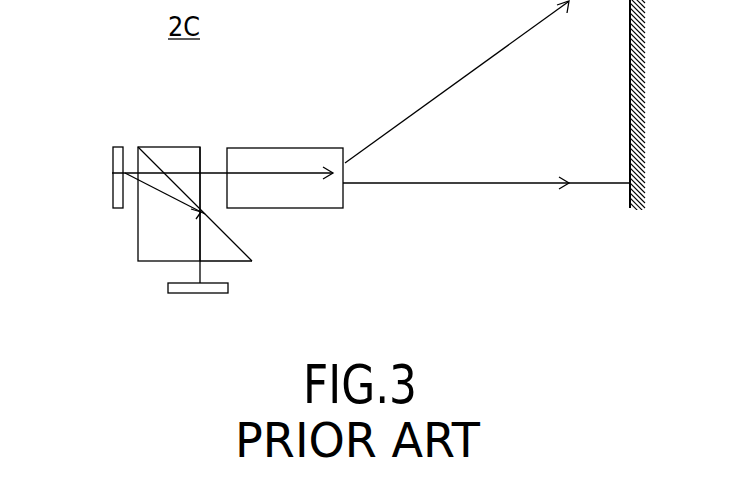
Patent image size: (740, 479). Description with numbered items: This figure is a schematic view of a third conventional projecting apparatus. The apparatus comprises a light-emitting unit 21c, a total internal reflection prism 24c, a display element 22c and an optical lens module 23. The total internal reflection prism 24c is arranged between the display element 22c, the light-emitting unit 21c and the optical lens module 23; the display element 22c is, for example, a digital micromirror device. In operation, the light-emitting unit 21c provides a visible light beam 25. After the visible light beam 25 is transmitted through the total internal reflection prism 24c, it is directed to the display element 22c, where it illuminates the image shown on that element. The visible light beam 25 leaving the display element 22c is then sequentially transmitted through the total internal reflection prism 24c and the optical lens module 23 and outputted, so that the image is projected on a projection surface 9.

The projection surface 9 is at (633, 60).
The light-emitting unit 21c is at (168, 285).
The display element 22c is at (118, 175).
The optical lens module 23 is at (280, 162).
The total internal reflection prism 24c is at (173, 160).
The visible light beam 25 is at (200, 242).